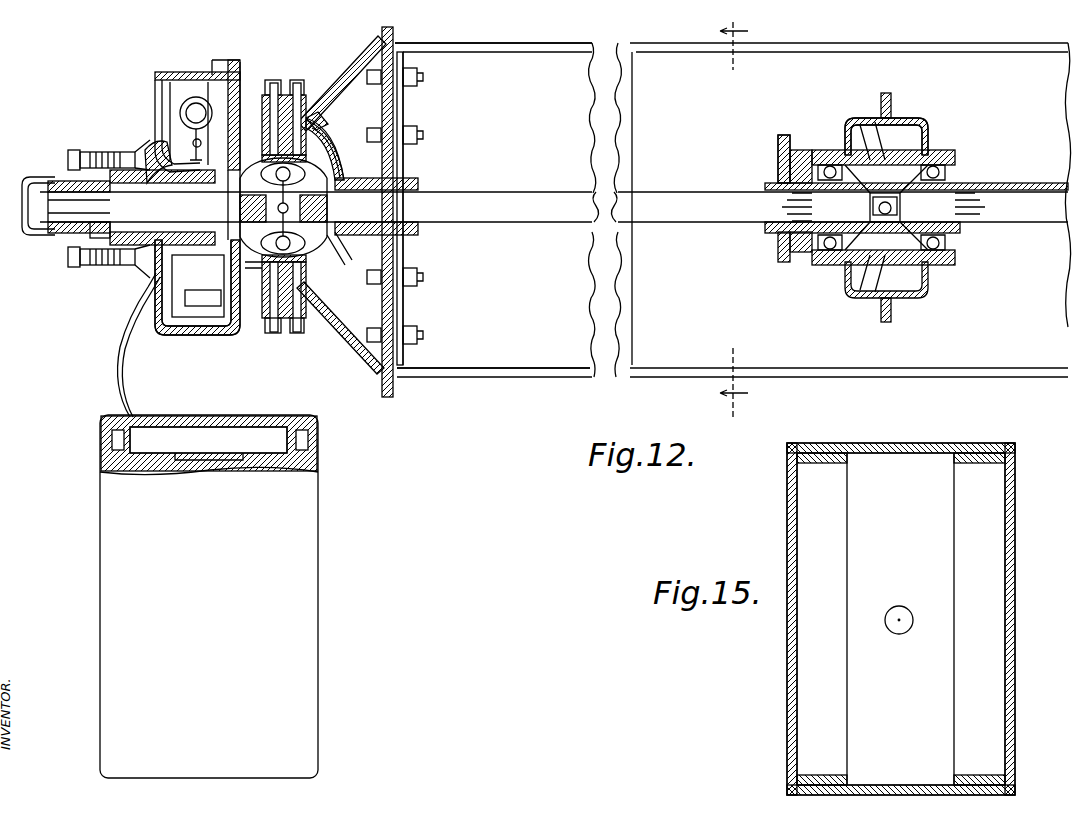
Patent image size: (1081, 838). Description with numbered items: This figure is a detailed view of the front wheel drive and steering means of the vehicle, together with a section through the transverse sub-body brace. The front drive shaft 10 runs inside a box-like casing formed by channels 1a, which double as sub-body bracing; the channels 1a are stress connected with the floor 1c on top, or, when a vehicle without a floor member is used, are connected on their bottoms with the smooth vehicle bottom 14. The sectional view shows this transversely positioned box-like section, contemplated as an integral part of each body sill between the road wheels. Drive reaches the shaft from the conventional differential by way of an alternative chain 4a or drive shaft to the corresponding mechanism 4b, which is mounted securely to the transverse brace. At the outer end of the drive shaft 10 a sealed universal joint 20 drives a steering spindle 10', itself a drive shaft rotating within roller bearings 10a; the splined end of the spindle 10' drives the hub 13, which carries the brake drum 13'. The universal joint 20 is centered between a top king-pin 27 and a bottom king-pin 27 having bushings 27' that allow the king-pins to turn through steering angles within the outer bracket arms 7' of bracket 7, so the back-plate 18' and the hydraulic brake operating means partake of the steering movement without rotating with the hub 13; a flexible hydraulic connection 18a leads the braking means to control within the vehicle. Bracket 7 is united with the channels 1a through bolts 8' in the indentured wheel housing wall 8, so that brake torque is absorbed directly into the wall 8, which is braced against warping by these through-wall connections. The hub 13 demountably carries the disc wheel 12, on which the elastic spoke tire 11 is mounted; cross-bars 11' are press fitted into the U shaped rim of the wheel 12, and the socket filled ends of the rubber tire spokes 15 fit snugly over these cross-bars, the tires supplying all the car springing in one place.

In FIG. 12, the sub-body transverse brace channel 1a is at (633, 93).
In FIG. 15, the sub-body transverse brace channel 1a is at (1010, 612).
In FIG. 12, the floor 1c is at (543, 46).
In FIG. 15, the floor 1c is at (904, 447).
In FIG. 12, the vehicle bottom 14 is at (496, 370).
In FIG. 15, the vehicle bottom 14 is at (897, 785).
In FIG. 12, the front drive shaft 10 is at (558, 226).
In FIG. 15, the front drive shaft 10 is at (904, 608).
In FIG. 12, the roller bearings 10a is at (148, 152).
In FIG. 12, the steering spindle 10' is at (94, 260).
In FIG. 12, the chain 4a is at (776, 258).
In FIG. 12, the corresponding drive mechanism 4b is at (930, 128).
In FIG. 12, the bracket 7 is at (340, 334).
In FIG. 12, the outer bracket arms 7' is at (251, 311).
In FIG. 12, the wall 8 is at (398, 209).
In FIG. 12, the bolts 8' is at (406, 206).
In FIG. 12, the elastic spoke tire 11 is at (222, 596).
In FIG. 12, the cross-bars 11' is at (208, 418).
In FIG. 12, the disc wheel 12 is at (118, 364).
In FIG. 12, the hub 13 is at (118, 199).
In FIG. 12, the brake drum 13' is at (197, 108).
In FIG. 12, the rubber tire spokes 15 is at (745, 221).
In FIG. 12, the back-plate 18' is at (237, 107).
In FIG. 12, the flexible hydraulic connection 18a is at (243, 98).
In FIG. 12, the universal joint 20 is at (325, 162).
In FIG. 12, the king-pin 27 is at (324, 198).
In FIG. 12, the bushings 27' is at (333, 110).